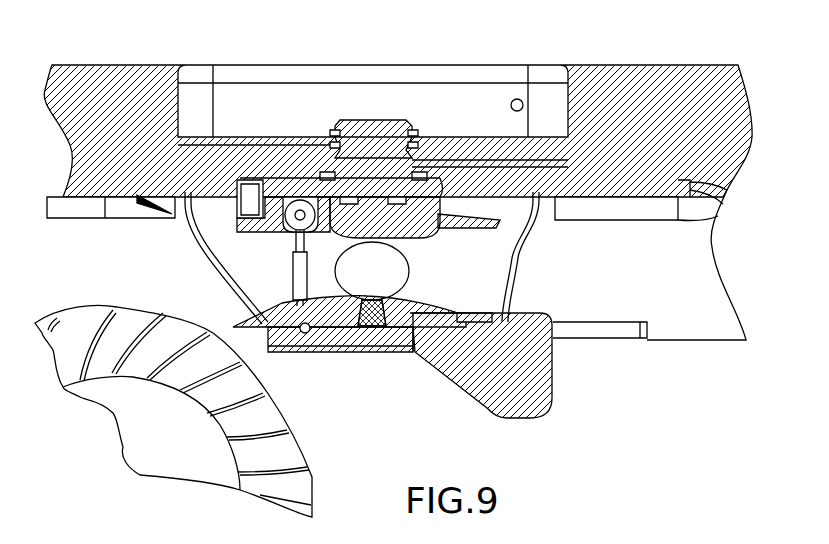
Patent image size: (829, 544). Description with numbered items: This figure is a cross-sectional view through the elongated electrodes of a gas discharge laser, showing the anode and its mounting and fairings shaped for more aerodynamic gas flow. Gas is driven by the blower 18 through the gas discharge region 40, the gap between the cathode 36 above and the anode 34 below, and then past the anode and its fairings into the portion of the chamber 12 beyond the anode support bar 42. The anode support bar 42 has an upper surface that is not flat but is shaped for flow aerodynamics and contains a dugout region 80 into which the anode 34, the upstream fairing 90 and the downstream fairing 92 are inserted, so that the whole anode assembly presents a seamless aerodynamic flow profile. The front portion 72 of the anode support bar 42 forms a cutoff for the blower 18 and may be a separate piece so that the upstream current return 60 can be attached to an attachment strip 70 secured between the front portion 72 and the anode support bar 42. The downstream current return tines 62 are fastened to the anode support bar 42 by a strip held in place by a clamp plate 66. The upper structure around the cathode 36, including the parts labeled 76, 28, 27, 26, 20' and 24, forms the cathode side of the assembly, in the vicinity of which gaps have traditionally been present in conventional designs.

The housing 76 is at (666, 78).
The threaded boss 28 is at (300, 213).
The plate 27 is at (285, 190).
The pivot pin 26 is at (297, 203).
The bracket 20' is at (202, 219).
The gas discharge region 40 is at (392, 264).
The cathode 36 is at (455, 224).
The link rod 24 is at (296, 264).
The upstream fairing 90 is at (318, 299).
The current return 60 is at (215, 275).
The downstream current return tines 62 is at (535, 257).
The front portion of the anode support bar 72 is at (243, 314).
The downstream fairing 92 is at (432, 311).
The anode 34 is at (372, 292).
The clamp plate 66 is at (478, 310).
The attachment strip 70 is at (308, 352).
The dugout region 80 is at (410, 350).
The anode support bar 42 is at (568, 381).
The blower 18 is at (328, 450).
The chamber 12 is at (423, 444).